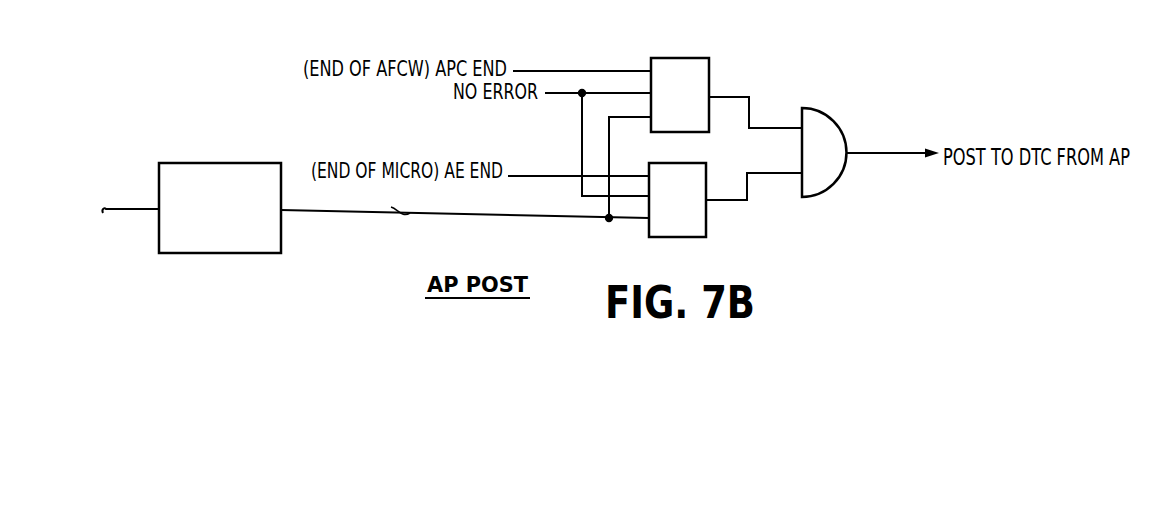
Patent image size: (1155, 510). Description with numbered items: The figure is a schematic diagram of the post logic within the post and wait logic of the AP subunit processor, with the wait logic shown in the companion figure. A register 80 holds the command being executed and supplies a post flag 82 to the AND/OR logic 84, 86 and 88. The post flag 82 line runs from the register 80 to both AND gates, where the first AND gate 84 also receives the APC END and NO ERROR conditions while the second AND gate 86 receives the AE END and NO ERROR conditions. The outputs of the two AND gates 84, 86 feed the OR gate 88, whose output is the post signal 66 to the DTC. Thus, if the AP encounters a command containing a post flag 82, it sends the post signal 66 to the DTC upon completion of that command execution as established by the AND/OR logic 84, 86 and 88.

The register 80 is at (137, 207).
The post flag 82 is at (472, 214).
The AND gate 84 is at (688, 58).
The AND gate 86 is at (706, 224).
The OR gate 88 is at (824, 113).
The post signal 66 is at (863, 151).